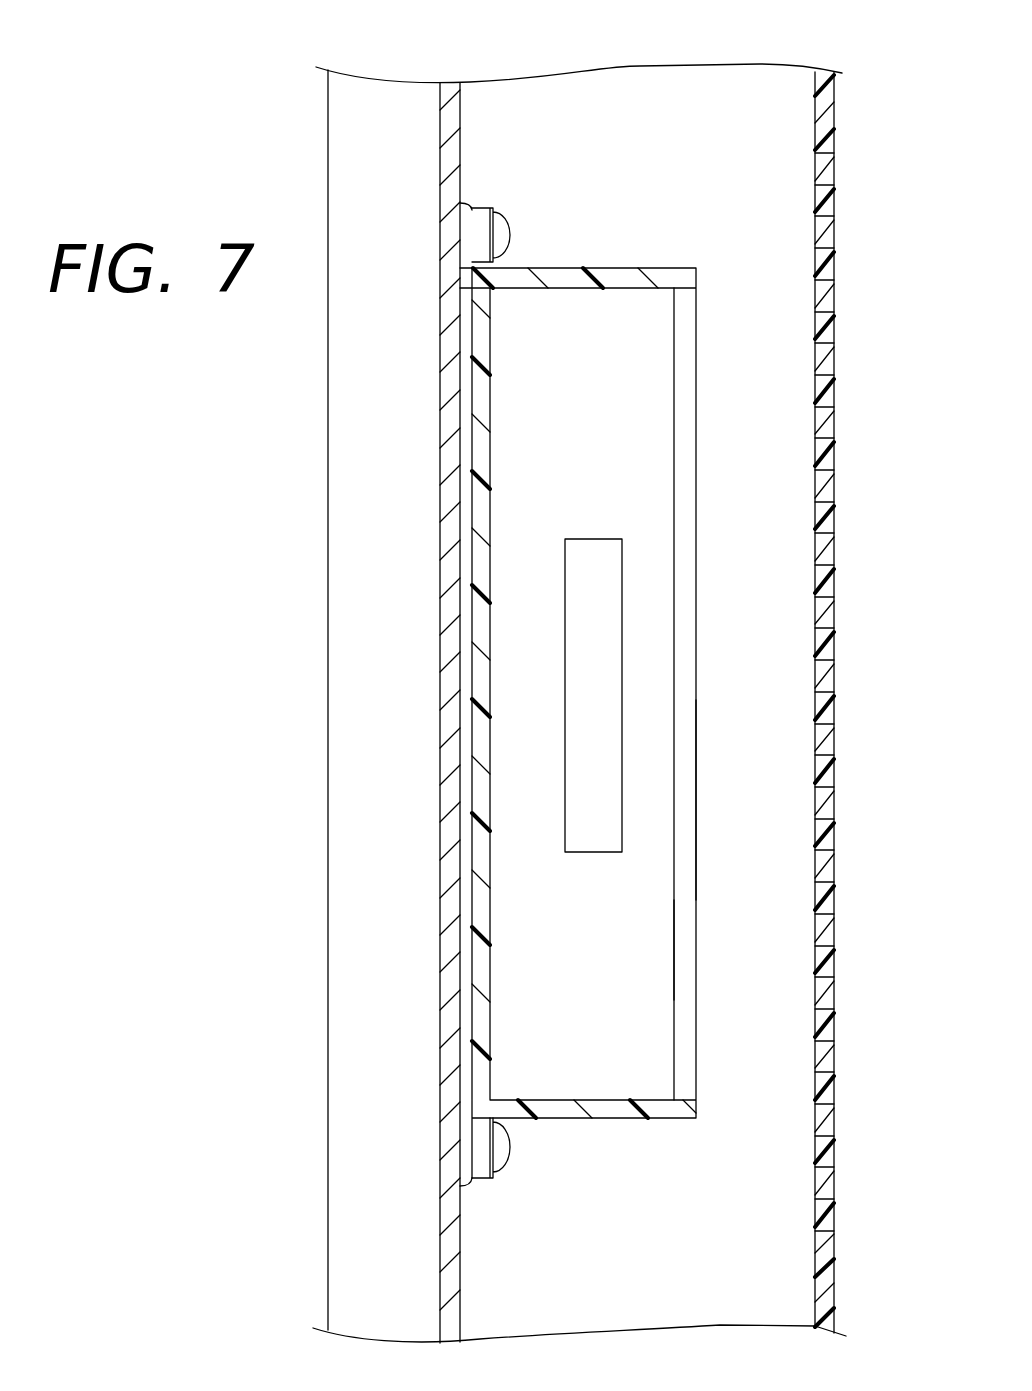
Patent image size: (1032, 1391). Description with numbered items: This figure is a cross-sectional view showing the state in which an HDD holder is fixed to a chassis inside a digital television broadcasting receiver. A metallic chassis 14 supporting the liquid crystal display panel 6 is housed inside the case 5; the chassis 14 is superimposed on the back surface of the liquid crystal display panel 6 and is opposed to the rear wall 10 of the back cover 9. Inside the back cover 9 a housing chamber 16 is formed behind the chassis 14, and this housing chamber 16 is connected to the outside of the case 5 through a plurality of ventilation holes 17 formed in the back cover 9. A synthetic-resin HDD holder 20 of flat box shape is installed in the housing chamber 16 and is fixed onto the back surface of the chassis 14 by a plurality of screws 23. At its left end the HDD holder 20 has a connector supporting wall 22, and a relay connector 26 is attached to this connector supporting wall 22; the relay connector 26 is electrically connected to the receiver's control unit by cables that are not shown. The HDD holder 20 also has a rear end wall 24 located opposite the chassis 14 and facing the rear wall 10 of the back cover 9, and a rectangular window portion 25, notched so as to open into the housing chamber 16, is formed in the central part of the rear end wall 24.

The case 5 is at (633, 66).
The liquid crystal display panel 6 is at (335, 1198).
The back cover 9 is at (838, 1283).
The rear wall 10 is at (828, 122).
The chassis 14 is at (442, 754).
The housing chamber 16 is at (712, 1243).
The ventilation holes 17 is at (826, 303).
The HDD holder 20 is at (658, 268).
The connector supporting wall 22 is at (652, 453).
The screws 23 is at (510, 238).
The rear end wall 24 is at (696, 806).
The window portion 25 is at (680, 935).
The relay connector 26 is at (612, 703).